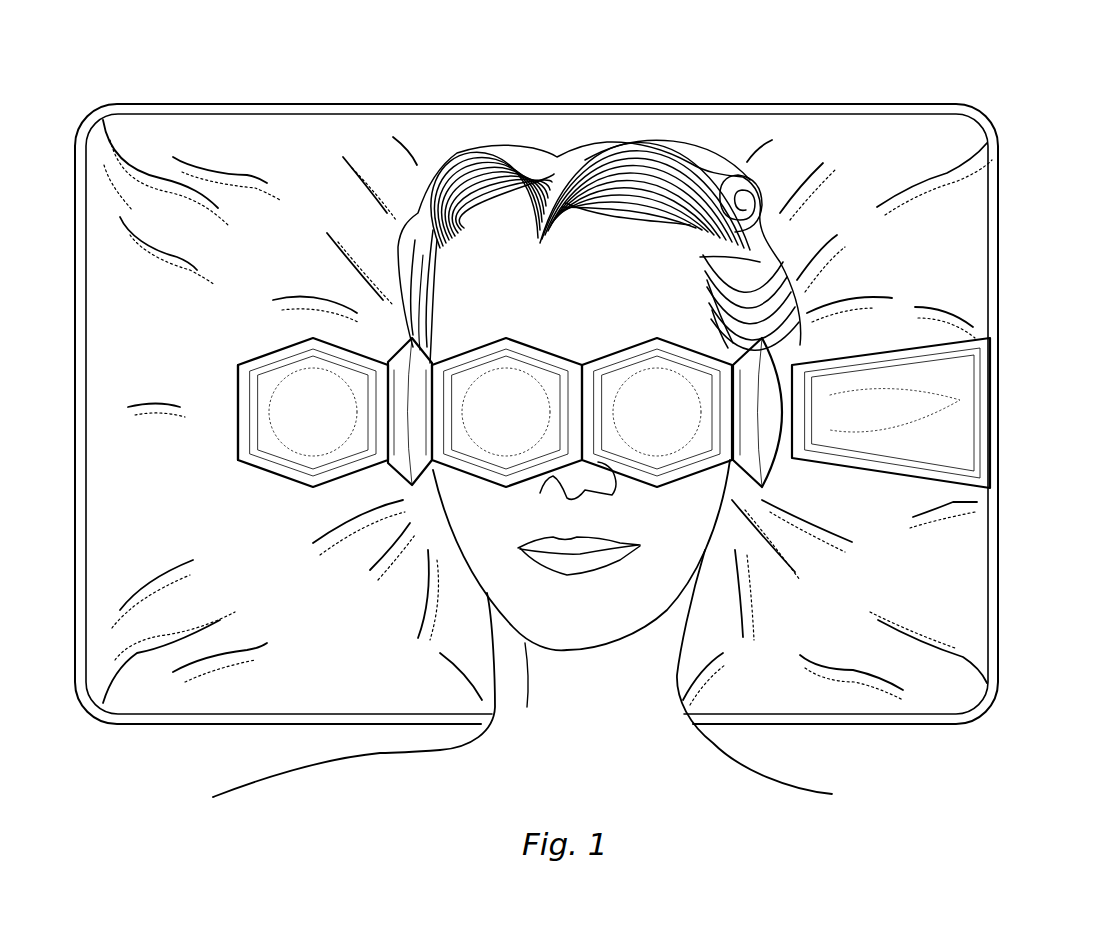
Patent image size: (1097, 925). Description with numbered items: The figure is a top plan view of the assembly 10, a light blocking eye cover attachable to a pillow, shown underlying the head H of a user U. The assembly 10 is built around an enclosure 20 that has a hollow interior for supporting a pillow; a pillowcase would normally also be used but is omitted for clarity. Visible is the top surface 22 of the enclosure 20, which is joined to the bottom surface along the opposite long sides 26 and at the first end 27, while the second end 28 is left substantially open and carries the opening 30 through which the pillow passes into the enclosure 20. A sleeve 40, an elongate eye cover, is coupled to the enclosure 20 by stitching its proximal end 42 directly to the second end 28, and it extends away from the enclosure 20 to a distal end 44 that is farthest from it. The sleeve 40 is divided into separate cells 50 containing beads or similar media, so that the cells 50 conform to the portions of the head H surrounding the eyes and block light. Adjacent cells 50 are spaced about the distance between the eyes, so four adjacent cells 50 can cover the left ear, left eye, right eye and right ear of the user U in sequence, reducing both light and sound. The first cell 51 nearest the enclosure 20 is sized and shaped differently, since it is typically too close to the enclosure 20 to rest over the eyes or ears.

The assembly 10 is at (805, 92).
The enclosure 20 is at (337, 105).
The top surface 22 is at (273, 246).
The long sides 26 is at (412, 103).
The first end 27 is at (997, 550).
The second end 28 is at (75, 473).
The opening 30 is at (76, 352).
The sleeve 40 is at (872, 357).
The proximal end 42 is at (990, 408).
The distal end 44 is at (248, 413).
The cells 50 is at (320, 415).
The first cell 51 is at (903, 419).
The head H is at (518, 308).
The user U is at (452, 790).